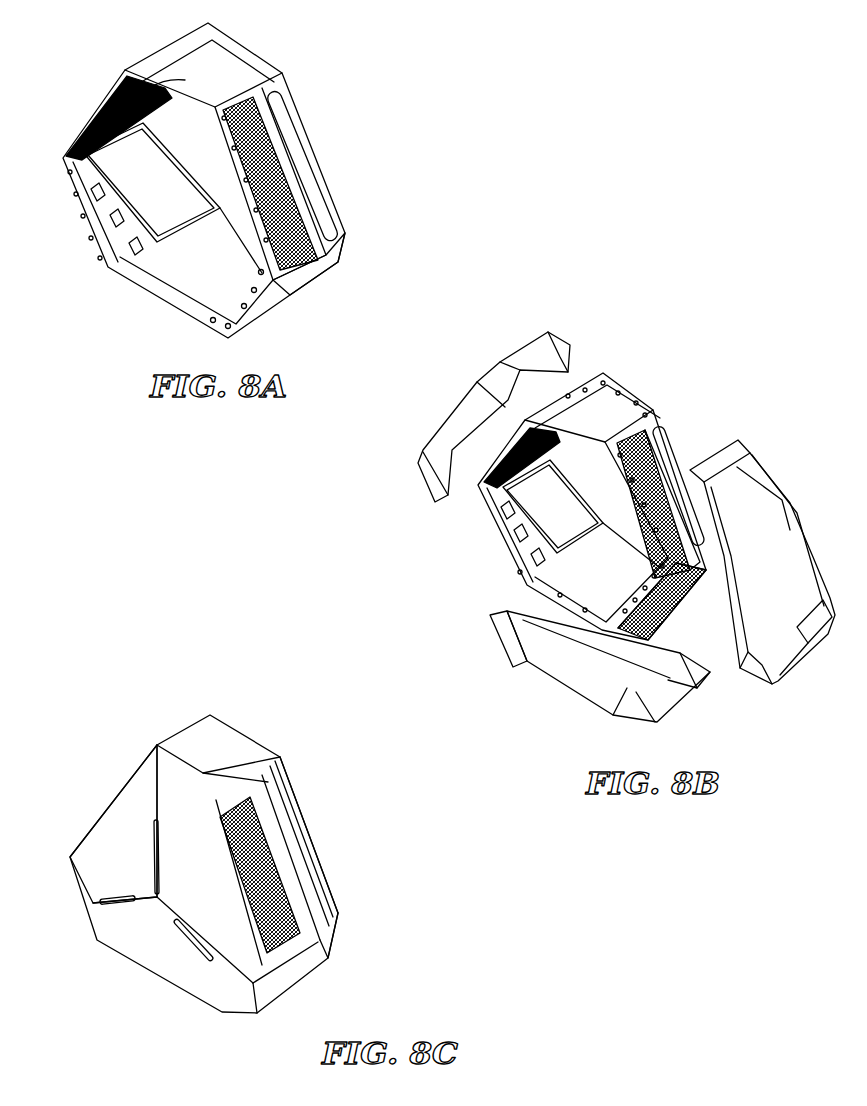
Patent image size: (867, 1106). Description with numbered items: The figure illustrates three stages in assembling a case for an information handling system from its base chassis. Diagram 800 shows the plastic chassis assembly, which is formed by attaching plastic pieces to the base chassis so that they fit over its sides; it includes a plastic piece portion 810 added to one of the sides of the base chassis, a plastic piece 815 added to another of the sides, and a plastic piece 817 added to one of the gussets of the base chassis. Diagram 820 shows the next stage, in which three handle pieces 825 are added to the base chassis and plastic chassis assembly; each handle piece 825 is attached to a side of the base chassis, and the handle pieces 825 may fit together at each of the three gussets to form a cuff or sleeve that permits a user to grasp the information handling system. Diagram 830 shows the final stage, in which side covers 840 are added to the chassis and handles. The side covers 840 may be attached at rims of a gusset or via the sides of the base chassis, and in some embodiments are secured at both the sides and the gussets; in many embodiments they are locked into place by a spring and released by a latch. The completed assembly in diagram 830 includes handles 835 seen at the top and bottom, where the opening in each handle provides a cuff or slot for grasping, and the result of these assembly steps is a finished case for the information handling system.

In FIG. 8A, the diagram of plastic chassis assembly 800 is at (220, 192).
In FIG. 8A, the plastic piece portion 810 is at (103, 103).
In FIG. 8A, the plastic piece 815 is at (335, 250).
In FIG. 8A, the gusset plastic piece 817 is at (310, 297).
In FIG. 8B, the diagram of handle piece addition 820 is at (626, 505).
In FIG. 8B, the handle piece 825 is at (553, 343).
In FIG. 8C, the diagram of side cover addition 830 is at (240, 830).
In FIG. 8C, the handle 835 is at (290, 747).
In FIG. 8C, the side cover 840 is at (117, 808).